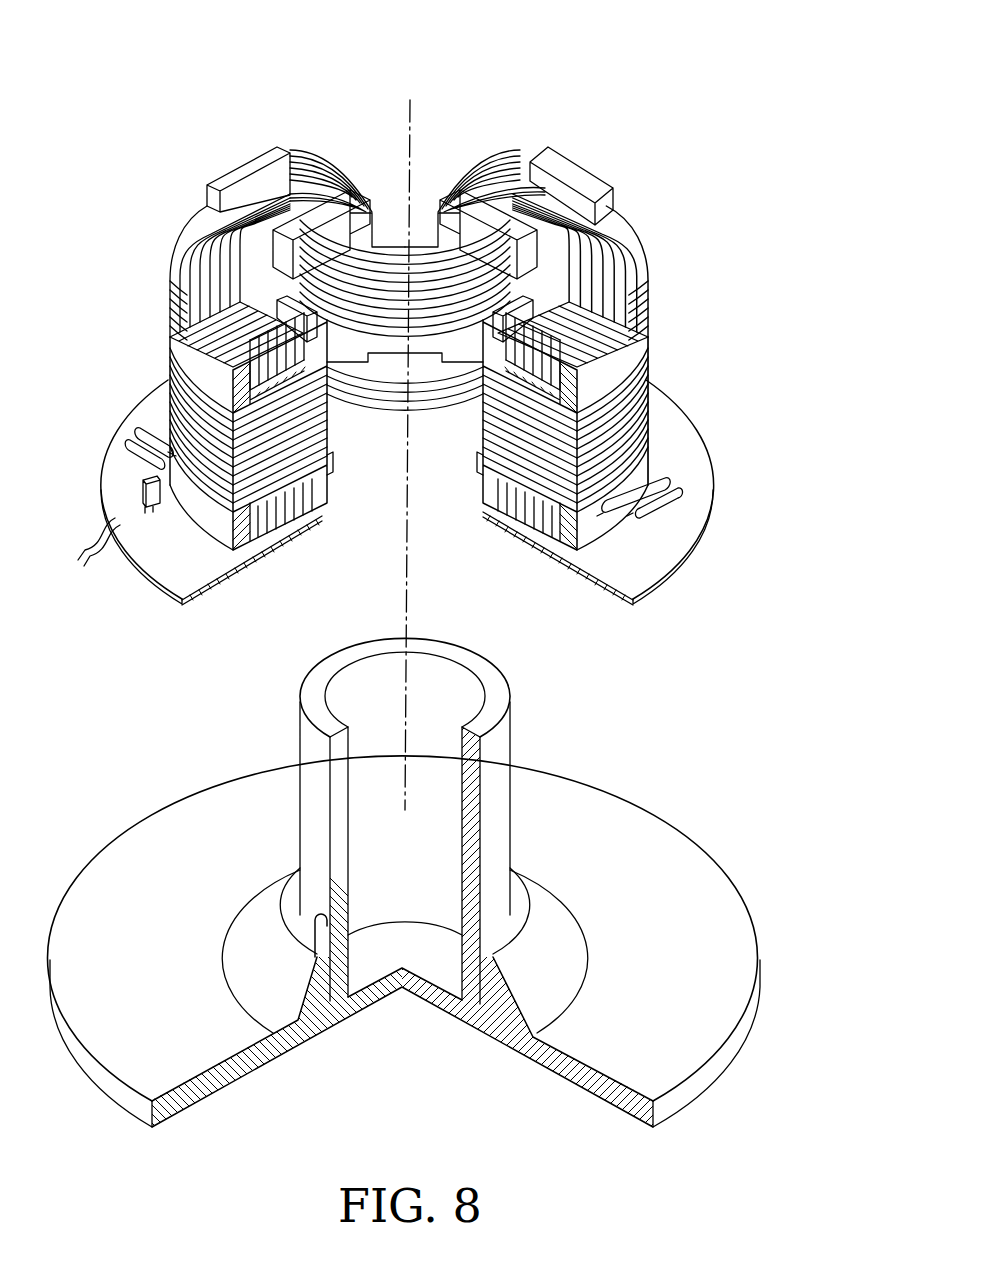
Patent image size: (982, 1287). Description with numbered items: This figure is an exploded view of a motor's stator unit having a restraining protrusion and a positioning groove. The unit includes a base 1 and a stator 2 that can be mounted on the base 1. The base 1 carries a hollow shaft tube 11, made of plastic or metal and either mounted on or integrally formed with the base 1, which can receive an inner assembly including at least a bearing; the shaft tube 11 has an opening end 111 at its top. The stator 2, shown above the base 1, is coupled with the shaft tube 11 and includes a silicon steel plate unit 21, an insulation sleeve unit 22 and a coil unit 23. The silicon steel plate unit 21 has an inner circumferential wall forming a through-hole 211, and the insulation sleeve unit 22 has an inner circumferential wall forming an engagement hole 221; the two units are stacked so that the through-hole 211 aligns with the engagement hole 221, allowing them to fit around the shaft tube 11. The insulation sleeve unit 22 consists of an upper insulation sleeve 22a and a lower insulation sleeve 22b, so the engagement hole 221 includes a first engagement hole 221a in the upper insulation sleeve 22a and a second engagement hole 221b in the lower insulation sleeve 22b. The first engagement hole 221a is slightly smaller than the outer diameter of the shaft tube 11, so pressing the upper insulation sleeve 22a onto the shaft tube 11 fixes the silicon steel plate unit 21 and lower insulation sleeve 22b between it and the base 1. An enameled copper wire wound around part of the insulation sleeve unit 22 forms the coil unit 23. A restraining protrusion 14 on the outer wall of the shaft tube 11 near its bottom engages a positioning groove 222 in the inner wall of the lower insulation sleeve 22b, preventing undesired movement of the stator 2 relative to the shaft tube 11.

The base 1 is at (647, 853).
The shaft tube 11 is at (478, 821).
The opening end 111 is at (480, 684).
The restraining protrusion 14 is at (314, 914).
The stator 2 is at (461, 311).
The silicon steel plate unit 21 is at (176, 396).
The through-hole 211 is at (487, 300).
The insulation sleeve unit 22 is at (660, 348).
The upper insulation sleeve 22a is at (613, 204).
The lower insulation sleeve 22b is at (612, 510).
The engagement hole 221 is at (405, 232).
The first engagement hole 221a is at (466, 234).
The second engagement hole 221b is at (468, 456).
The positioning groove 222 is at (325, 473).
The coil unit 23 is at (217, 228).